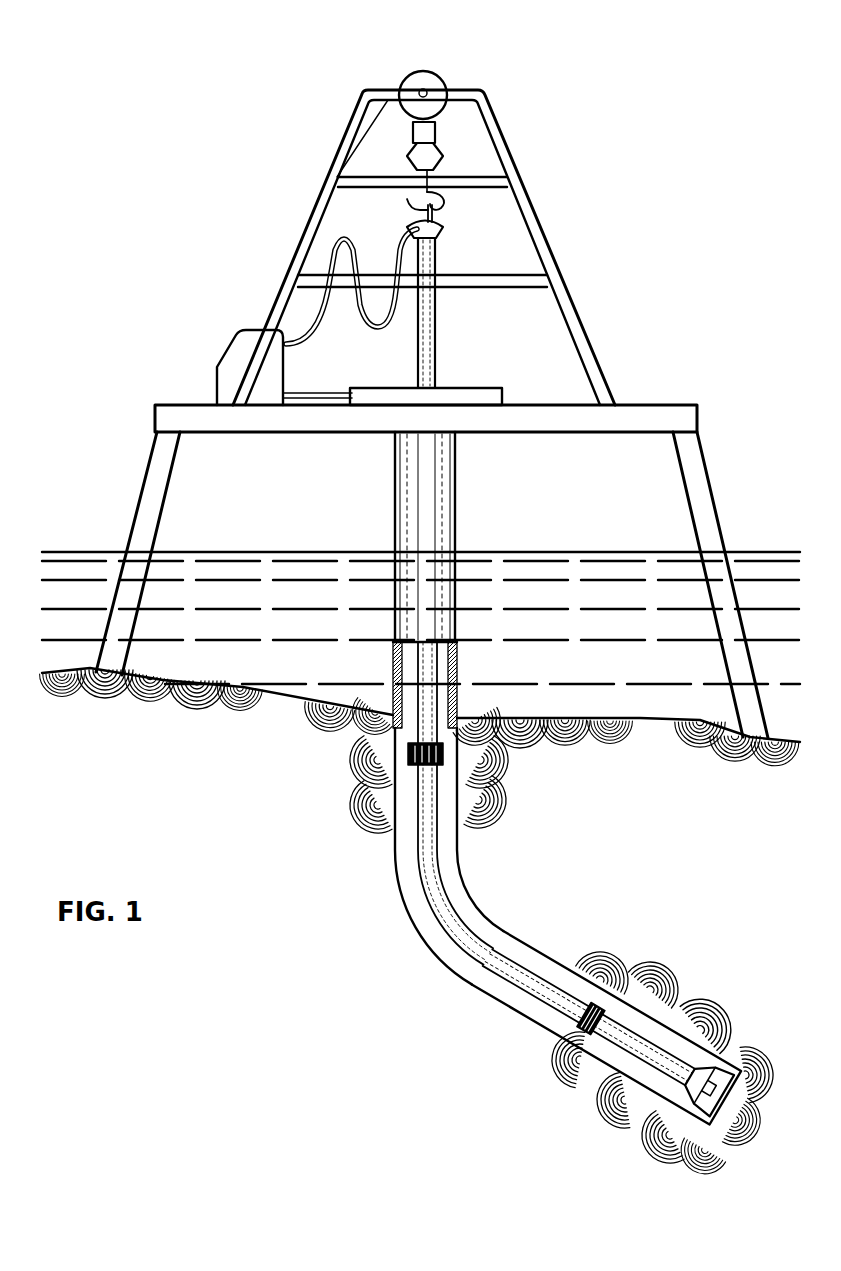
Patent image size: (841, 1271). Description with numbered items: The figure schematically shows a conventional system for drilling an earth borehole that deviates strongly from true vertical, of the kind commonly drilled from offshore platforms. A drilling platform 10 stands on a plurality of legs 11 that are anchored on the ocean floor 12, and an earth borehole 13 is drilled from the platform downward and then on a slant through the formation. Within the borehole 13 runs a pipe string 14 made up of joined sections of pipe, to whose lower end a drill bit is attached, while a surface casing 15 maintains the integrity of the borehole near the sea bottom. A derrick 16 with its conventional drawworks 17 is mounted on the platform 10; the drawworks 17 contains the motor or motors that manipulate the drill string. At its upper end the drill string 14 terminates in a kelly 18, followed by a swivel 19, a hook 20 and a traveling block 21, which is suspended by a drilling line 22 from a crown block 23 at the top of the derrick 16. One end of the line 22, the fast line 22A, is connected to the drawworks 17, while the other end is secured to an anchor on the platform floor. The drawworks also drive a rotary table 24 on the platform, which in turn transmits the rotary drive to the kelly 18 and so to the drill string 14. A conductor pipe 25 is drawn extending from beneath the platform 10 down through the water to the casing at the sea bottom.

The drilling platform 10 is at (643, 404).
The legs 11 is at (715, 510).
The ocean floor 12 is at (783, 737).
The earth borehole 13 is at (500, 945).
The pipe string 14 is at (548, 988).
The surface casing 15 is at (728, 1045).
The derrick 16 is at (513, 160).
The drawworks 17 is at (247, 330).
The kelly 18 is at (436, 345).
The swivel 19 is at (443, 228).
The hook 20 is at (445, 200).
The traveling block 21 is at (443, 160).
The drilling line 22 is at (412, 130).
The fast line 22A is at (362, 157).
The crown block 23 is at (440, 72).
The rotary table 24 is at (484, 388).
The conductor pipe 25 is at (458, 520).